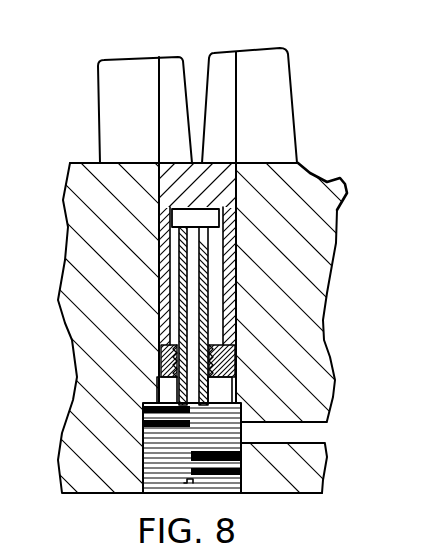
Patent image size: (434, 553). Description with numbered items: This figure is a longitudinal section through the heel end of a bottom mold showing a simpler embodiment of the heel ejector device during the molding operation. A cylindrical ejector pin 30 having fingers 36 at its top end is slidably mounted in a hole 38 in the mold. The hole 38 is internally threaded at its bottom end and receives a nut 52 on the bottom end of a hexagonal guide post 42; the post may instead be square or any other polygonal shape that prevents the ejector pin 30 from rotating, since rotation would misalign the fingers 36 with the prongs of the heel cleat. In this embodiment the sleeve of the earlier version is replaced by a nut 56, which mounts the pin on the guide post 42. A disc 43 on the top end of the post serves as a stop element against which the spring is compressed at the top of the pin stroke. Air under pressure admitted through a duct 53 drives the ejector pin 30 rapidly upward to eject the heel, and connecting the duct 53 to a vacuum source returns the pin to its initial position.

The fingers 36 is at (222, 68).
The hole 38 is at (153, 313).
The ejector pin 30 is at (157, 278).
The guide post 42 is at (180, 250).
The disc 43 is at (216, 214).
The nut 56 is at (222, 366).
The duct 53 is at (307, 443).
The nut 52 is at (196, 481).